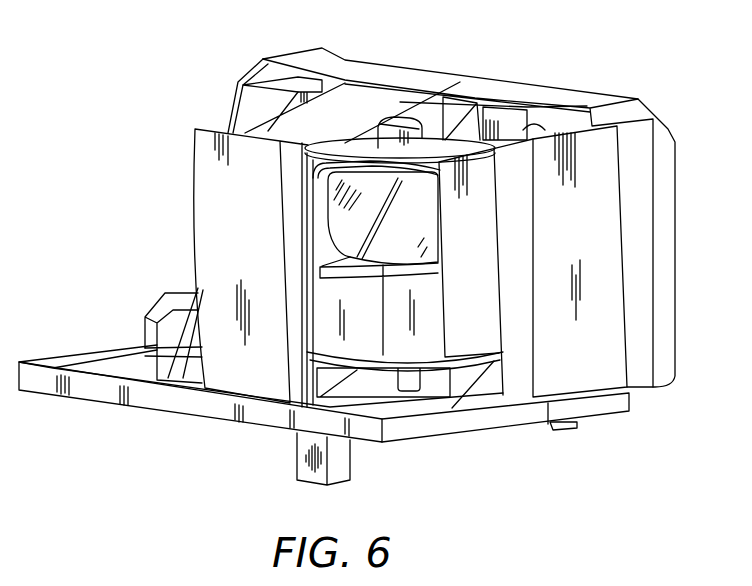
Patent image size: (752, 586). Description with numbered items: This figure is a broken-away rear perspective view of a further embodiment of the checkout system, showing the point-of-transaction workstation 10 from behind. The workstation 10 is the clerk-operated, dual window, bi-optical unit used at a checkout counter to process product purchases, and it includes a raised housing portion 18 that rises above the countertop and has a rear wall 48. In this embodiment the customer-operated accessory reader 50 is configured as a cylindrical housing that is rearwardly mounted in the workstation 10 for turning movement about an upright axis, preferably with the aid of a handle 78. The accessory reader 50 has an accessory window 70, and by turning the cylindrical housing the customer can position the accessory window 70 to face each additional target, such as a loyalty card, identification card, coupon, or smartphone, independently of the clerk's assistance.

The point-of-transaction workstation 10 is at (176, 121).
The raised housing portion 18 is at (599, 380).
The rear wall 48 is at (248, 381).
The accessory reader 50 is at (420, 239).
The accessory window 70 is at (343, 225).
The handle 78 is at (399, 128).